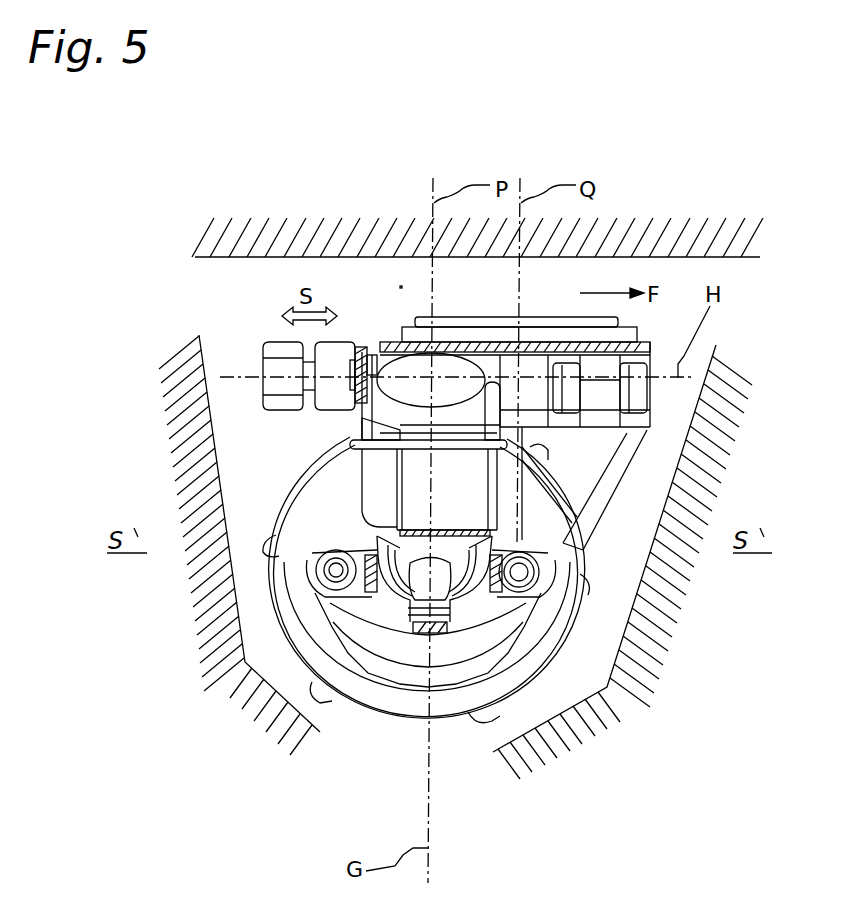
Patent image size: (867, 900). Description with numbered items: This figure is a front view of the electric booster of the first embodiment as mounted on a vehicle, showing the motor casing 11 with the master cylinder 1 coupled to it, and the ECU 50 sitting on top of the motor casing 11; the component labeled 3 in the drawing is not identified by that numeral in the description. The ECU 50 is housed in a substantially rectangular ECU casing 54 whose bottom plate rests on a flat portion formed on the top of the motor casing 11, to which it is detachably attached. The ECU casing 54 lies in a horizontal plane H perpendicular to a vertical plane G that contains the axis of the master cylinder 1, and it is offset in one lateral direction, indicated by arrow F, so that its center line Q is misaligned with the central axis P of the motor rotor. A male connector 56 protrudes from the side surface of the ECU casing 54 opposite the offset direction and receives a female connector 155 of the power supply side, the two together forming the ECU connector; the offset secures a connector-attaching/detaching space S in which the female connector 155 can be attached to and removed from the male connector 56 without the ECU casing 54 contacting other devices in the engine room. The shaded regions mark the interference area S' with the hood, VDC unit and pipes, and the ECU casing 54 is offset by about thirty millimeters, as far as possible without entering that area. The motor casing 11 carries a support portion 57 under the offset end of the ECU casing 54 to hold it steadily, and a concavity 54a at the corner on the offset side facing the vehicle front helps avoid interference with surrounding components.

The master cylinder 1 is at (498, 606).
The electric motor 3 is at (378, 490).
The motor casing 11 is at (280, 643).
The ECU 50 is at (397, 276).
The ECU casing 54 is at (562, 299).
The concavity 54a is at (608, 398).
The connector (male connector) 56 is at (363, 347).
The support portion 57 is at (612, 474).
The connector (female connector) 155 is at (305, 353).